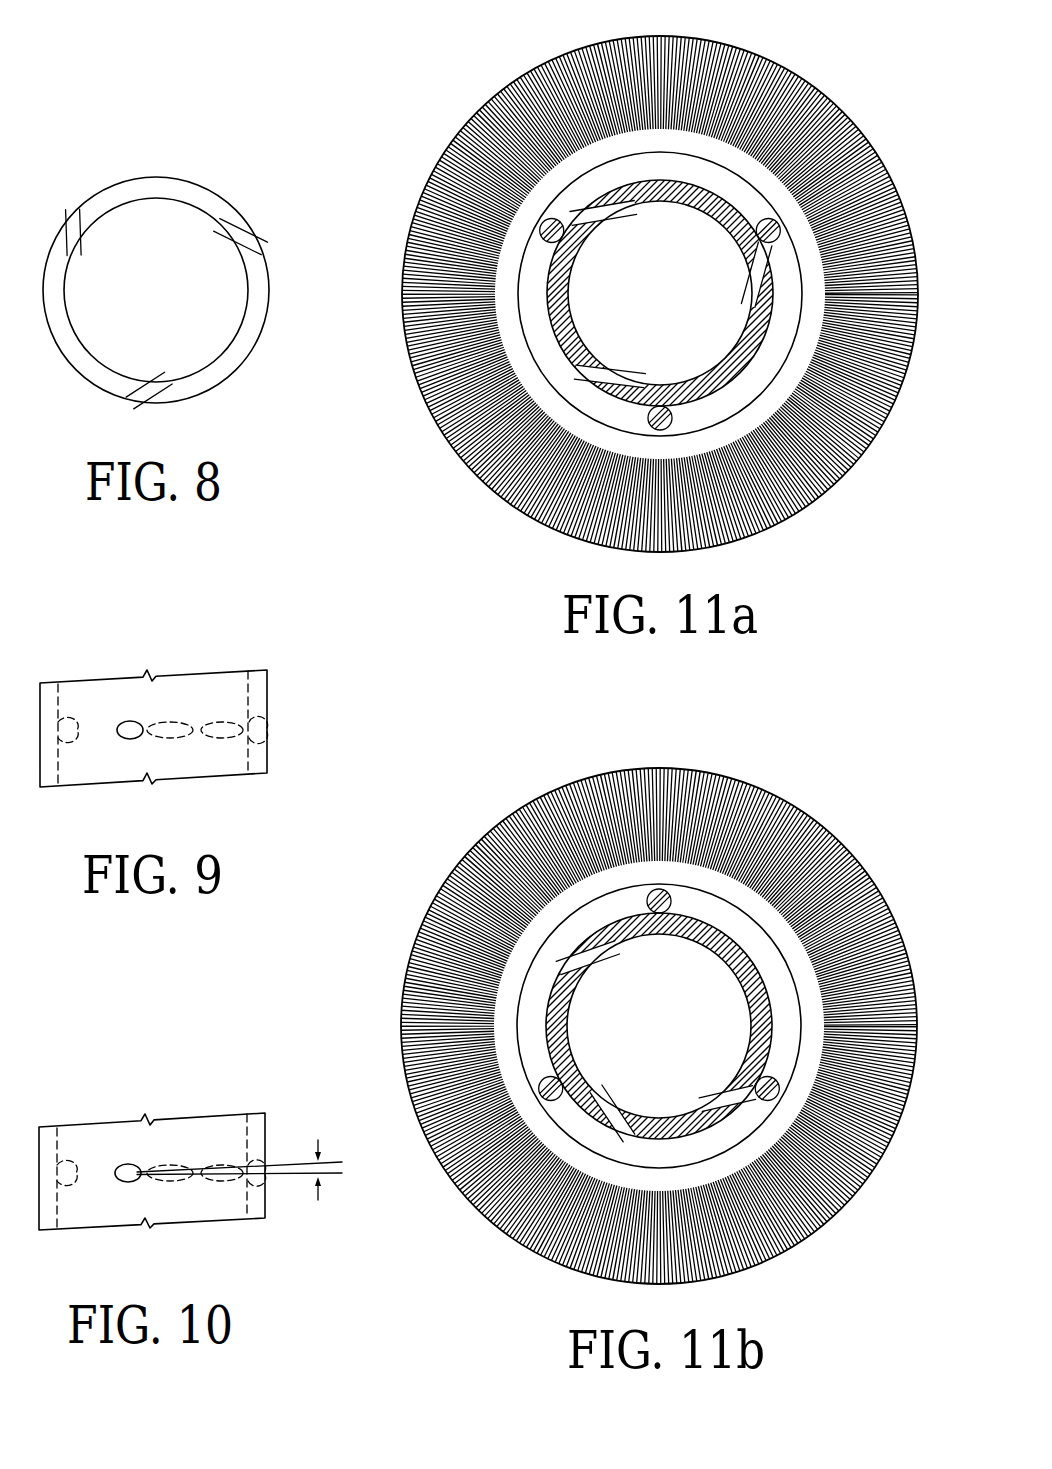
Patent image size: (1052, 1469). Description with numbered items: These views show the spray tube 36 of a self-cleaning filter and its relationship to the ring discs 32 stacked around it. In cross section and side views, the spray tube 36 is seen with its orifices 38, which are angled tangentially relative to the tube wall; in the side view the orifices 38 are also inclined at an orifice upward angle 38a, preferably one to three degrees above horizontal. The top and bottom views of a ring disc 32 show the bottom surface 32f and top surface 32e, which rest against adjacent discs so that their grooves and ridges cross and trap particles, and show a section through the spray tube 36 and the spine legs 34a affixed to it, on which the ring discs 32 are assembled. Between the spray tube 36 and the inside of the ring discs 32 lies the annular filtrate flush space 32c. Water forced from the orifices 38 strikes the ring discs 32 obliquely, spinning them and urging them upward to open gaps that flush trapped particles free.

In FIG. 11a, the ring disc 32 is at (642, 285).
In FIG. 11b, the ring disc 32 is at (659, 1005).
In FIG. 11a, the annular filtrate flush space 32c is at (582, 190).
In FIG. 11b, the annular filtrate flush space 32c is at (577, 1128).
In FIG. 11a, the top surface 32e is at (817, 128).
In FIG. 11b, the bottom surface 32f is at (830, 1157).
In FIG. 11a, the spine leg 34a is at (540, 232).
In FIG. 11b, the spine leg 34a is at (657, 887).
In FIG. 8, the spray tube 36 is at (182, 279).
In FIG. 9, the spray tube 36 is at (198, 695).
In FIG. 10, the spray tube 36 is at (190, 1122).
In FIG. 11a, the spray tube 36 is at (760, 355).
In FIG. 11b, the spray tube 36 is at (560, 973).
In FIG. 8, the orifice 38 is at (70, 224).
In FIG. 9, the orifice 38 is at (127, 727).
In FIG. 10, the orifice 38 is at (130, 1167).
In FIG. 10, the orifice upward angle 38a is at (239, 1189).